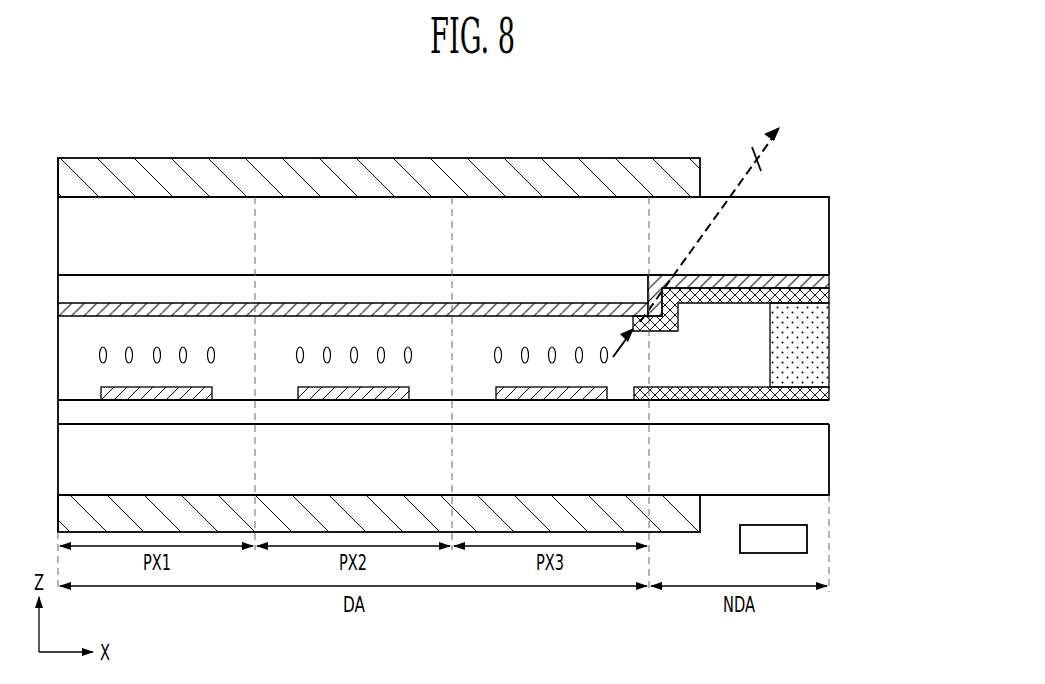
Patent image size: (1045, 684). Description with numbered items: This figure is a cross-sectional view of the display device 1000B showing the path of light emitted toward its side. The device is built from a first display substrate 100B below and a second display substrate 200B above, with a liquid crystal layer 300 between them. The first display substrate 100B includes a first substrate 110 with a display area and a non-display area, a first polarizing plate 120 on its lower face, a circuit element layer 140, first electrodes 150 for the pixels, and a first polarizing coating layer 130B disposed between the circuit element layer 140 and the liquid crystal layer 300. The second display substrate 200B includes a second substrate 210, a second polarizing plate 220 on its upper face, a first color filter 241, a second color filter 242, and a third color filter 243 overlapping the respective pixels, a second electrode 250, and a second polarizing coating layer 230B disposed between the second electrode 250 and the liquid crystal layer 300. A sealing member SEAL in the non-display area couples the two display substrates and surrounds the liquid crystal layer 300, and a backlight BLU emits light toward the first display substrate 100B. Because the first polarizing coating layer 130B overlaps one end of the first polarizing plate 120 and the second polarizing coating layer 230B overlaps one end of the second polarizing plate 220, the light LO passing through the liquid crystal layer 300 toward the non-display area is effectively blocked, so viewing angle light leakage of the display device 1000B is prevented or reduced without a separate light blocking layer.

The display device 1000B is at (834, 166).
The second display substrate 200B is at (888, 157).
The first display substrate 100B is at (888, 372).
The second polarizing plate 220 is at (632, 163).
The second substrate 210 is at (829, 225).
The first color filter 241 is at (173, 290).
The second color filter 242 is at (371, 290).
The third color filter 243 is at (538, 290).
The second electrode 250 is at (829, 283).
The second polarizing coating layer 230B is at (829, 297).
The liquid crystal layer 300 is at (640, 350).
The sealing member SEAL is at (829, 353).
The first electrodes 150 is at (590, 388).
The first polarizing coating layer 130B is at (829, 395).
The circuit element layer 140 is at (829, 417).
The first substrate 110 is at (829, 453).
The first polarizing plate 120 is at (700, 517).
The backlight BLU is at (807, 538).
The light LO is at (624, 289).